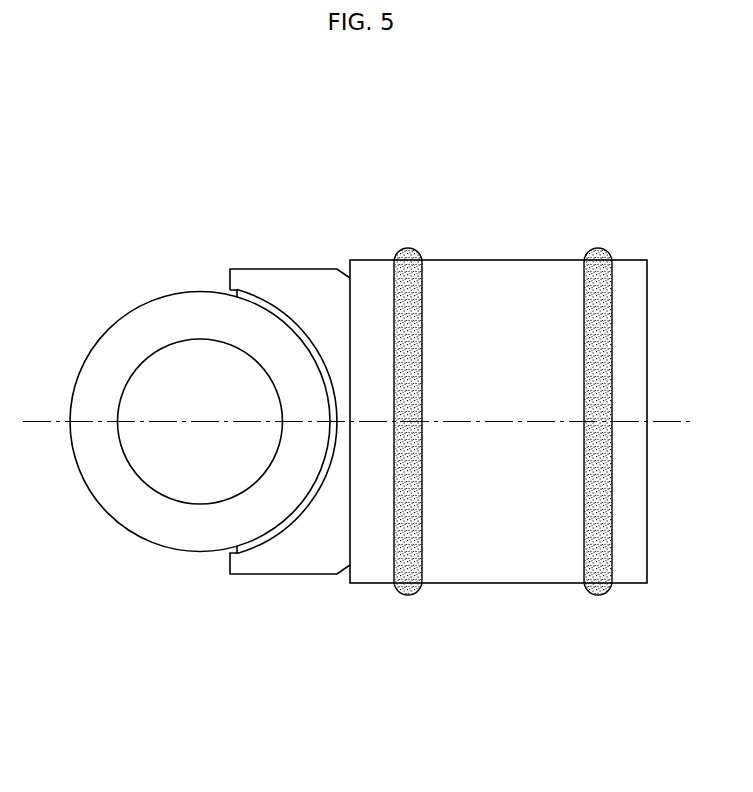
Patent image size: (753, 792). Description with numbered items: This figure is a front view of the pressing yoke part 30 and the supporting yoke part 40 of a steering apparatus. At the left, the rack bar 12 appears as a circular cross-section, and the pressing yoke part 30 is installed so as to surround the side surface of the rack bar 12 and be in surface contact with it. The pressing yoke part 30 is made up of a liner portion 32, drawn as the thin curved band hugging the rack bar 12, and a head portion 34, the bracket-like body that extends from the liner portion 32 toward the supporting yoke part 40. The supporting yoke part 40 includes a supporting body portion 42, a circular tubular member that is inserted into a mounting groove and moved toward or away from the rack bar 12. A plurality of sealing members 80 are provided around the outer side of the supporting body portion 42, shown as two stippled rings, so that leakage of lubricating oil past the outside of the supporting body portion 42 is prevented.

The rack bar 12 is at (145, 512).
The pressing yoke part 30 is at (276, 501).
The liner portion 32 is at (258, 545).
The head portion 34 is at (300, 550).
The supporting yoke part 40 is at (498, 419).
The supporting body portion 42 is at (536, 278).
The sealing members 80 is at (412, 592).